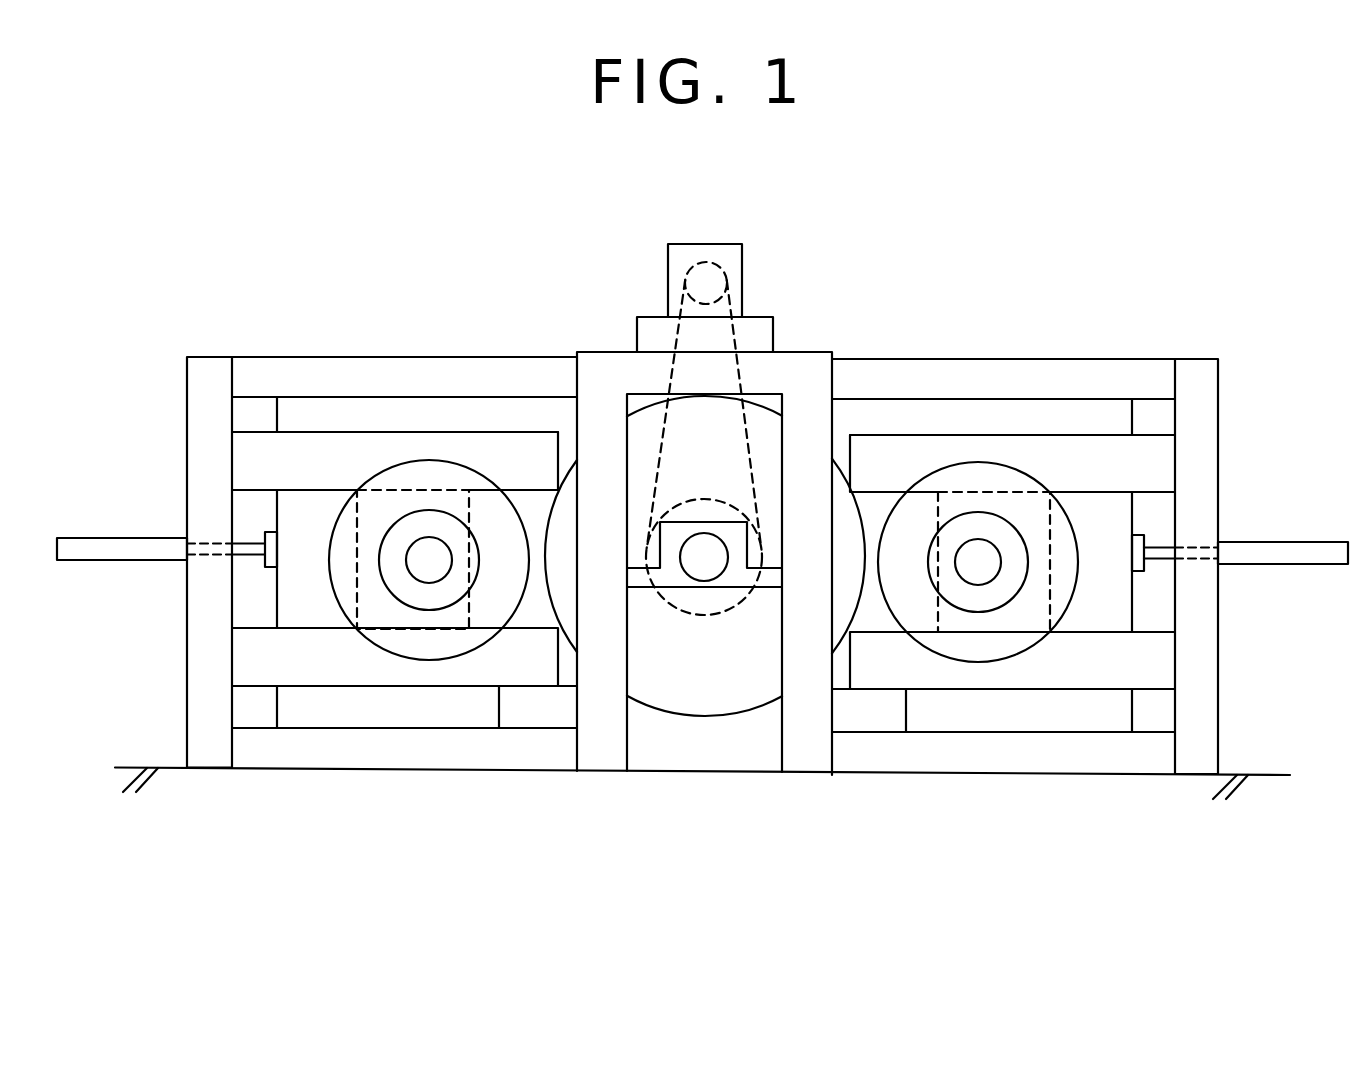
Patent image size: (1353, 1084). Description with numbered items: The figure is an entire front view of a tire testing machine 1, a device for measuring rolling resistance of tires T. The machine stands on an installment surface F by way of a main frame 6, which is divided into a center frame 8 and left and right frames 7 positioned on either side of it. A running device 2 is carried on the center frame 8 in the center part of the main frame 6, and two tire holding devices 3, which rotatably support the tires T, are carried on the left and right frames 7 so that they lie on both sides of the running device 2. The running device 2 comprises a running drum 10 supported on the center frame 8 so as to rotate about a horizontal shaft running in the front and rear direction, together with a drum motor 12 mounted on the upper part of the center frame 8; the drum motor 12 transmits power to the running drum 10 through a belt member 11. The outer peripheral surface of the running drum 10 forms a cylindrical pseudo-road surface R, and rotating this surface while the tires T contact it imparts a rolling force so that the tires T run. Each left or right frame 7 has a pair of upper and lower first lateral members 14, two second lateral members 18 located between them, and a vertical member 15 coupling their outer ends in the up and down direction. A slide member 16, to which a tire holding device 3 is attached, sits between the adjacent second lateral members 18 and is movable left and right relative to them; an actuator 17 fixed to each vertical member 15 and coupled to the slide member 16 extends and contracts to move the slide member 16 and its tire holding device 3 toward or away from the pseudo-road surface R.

The tire testing machine 1 is at (876, 203).
The running device 2 is at (685, 373).
The tire holding device 3 is at (418, 455).
The main frame 6 is at (1103, 302).
The left and right frame 7 is at (313, 355).
The center frame 8 is at (793, 348).
The running drum 10 is at (710, 700).
The belt member 11 is at (672, 342).
The drum motor 12 is at (683, 257).
The first lateral member 14 is at (258, 376).
The vertical member 15 is at (210, 640).
The slide member 16 is at (287, 512).
The actuator 17 is at (90, 562).
The second lateral member 18 is at (252, 461).
The pseudo-road surface R is at (547, 600).
The tire T is at (470, 470).
The installment surface F is at (1260, 773).